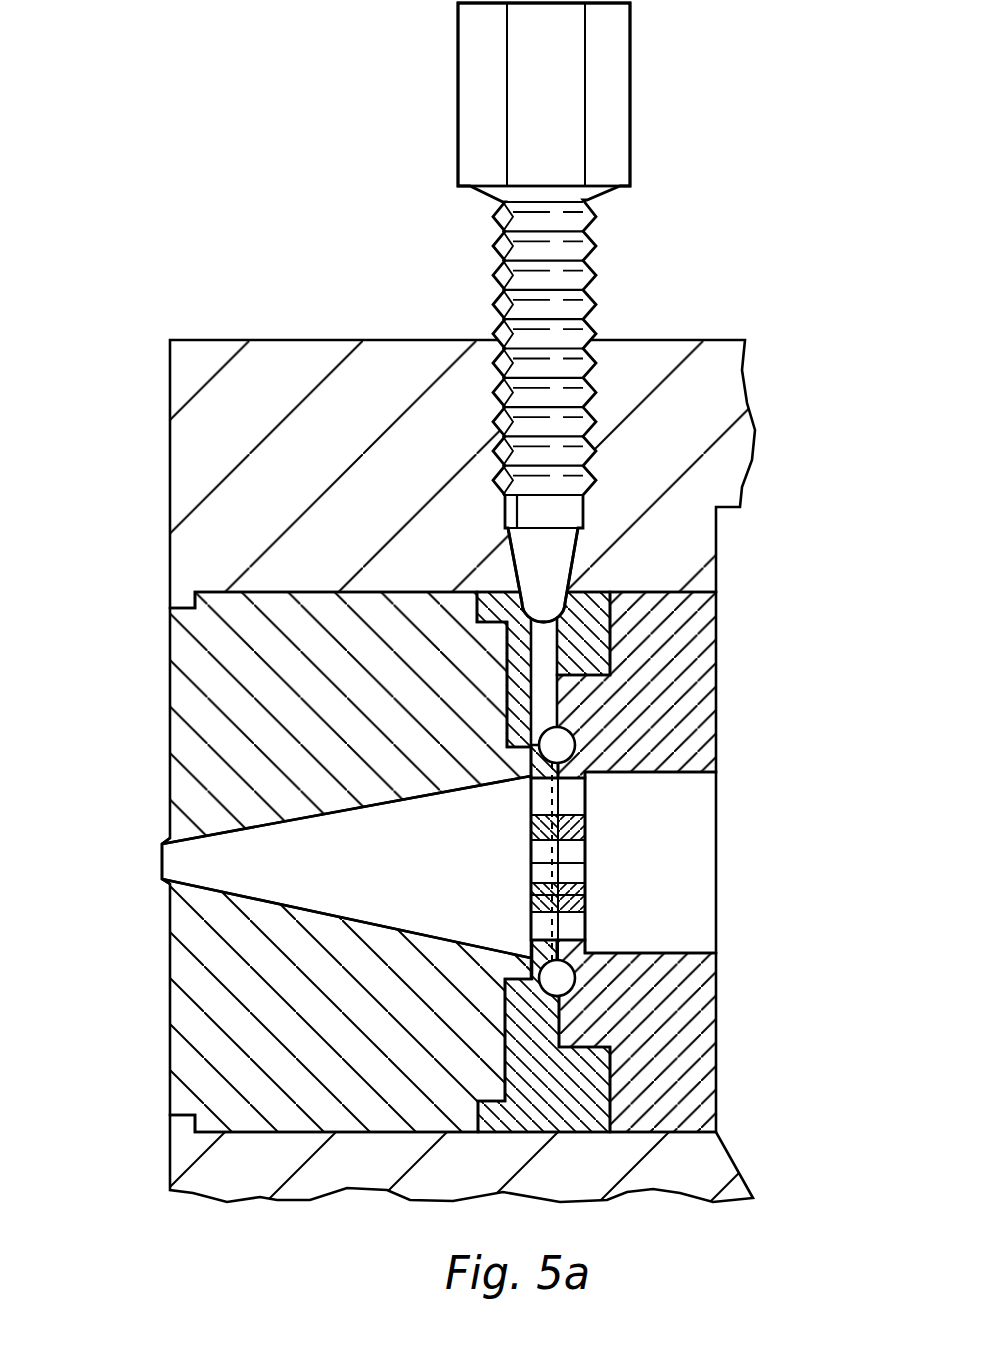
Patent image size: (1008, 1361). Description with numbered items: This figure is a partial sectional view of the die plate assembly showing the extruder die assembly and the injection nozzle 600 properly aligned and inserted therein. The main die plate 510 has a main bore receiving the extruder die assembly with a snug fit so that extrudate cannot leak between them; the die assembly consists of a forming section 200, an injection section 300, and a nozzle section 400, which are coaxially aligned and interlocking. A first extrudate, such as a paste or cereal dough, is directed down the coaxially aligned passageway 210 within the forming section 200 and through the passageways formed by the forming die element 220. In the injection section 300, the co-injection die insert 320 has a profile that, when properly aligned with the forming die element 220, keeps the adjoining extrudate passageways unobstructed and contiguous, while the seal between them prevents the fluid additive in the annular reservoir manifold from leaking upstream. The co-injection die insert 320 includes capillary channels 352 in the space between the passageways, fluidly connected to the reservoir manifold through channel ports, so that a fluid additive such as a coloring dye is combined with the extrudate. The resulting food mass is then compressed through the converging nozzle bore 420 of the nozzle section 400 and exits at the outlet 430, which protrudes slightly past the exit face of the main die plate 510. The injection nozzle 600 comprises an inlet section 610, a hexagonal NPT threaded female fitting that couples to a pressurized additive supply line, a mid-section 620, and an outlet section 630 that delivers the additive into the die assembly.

The forming section 200 is at (683, 720).
The passageway 210 is at (685, 872).
The forming die element 220 is at (565, 836).
The injection section 300 is at (588, 1115).
The co-injection die insert 320 is at (532, 890).
The capillary channels 352 is at (531, 898).
The nozzle section 400 is at (358, 719).
The converging nozzle bore 420 is at (368, 875).
The outlet 430 is at (162, 877).
The main die plate 510 is at (345, 486).
The injection nozzle 600 is at (580, 312).
The inlet section 610 is at (458, 102).
The mid-section 620 is at (487, 485).
The outlet section 630 is at (560, 585).